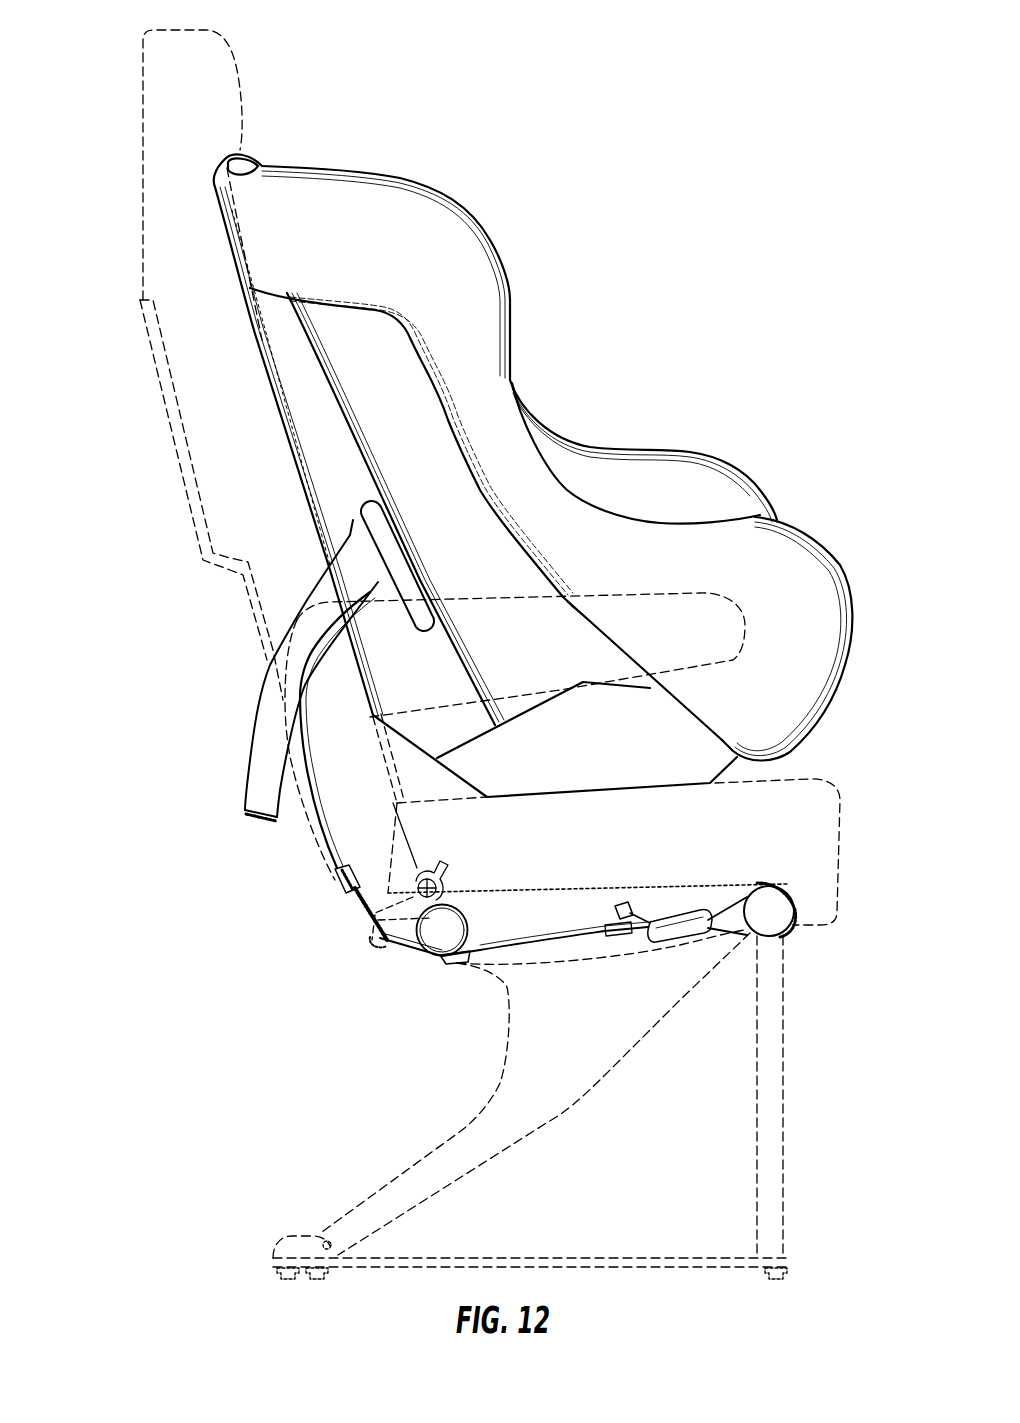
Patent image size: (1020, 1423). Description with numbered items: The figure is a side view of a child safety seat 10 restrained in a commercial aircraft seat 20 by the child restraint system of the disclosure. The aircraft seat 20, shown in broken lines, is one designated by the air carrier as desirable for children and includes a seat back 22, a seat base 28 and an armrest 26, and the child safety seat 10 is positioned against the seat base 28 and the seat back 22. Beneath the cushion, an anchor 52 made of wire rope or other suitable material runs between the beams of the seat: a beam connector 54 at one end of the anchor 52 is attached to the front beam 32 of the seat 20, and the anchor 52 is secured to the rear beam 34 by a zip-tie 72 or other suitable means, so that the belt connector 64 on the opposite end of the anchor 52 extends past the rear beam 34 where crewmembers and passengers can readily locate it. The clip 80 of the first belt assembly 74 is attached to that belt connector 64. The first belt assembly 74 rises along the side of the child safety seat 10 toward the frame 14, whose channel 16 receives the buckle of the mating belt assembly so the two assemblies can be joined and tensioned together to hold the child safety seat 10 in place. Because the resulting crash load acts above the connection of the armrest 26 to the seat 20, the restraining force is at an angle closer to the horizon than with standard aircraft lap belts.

The child safety seat 10 is at (510, 201).
The frame 14 is at (307, 398).
The channel 16 is at (368, 523).
The commercial aircraft seat 20 is at (254, 40).
The seat back 22 is at (143, 145).
The armrest 26 is at (723, 613).
The seat base 28 is at (835, 800).
The front beam 32 is at (774, 918).
The rear beam 34 is at (440, 938).
The anchor 52 is at (571, 951).
The beam connector 54 is at (803, 889).
The belt connector 64 is at (372, 958).
The zip-tie 72 is at (455, 960).
The first belt assembly 74 is at (257, 668).
The clip 80 is at (362, 903).